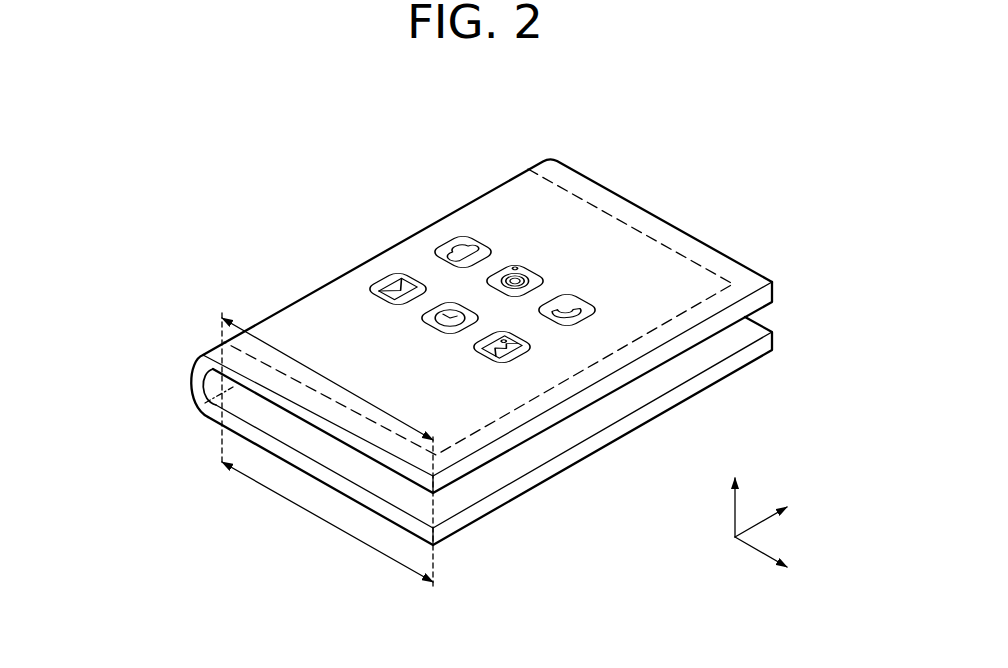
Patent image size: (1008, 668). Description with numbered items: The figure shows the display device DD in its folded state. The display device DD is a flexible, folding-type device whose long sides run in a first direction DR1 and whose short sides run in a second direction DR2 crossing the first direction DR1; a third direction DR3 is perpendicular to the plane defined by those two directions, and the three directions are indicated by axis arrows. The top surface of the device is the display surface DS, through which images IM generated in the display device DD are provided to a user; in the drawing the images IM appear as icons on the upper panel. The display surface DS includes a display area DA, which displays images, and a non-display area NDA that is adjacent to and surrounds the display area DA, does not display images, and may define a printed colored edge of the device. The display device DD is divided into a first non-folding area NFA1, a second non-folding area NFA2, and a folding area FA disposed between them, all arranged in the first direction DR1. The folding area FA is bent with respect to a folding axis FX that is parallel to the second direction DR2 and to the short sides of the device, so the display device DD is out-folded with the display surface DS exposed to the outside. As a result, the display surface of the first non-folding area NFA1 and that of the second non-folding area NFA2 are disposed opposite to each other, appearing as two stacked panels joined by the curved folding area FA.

The display device DD is at (447, 356).
The images IM is at (447, 236).
The display surface DS is at (487, 301).
The display area DA is at (663, 284).
The non-display area NDA is at (643, 222).
The folding area FA is at (222, 462).
The folding axis FX is at (205, 403).
The first non-folding area NFA1 is at (490, 449).
The second non-folding area NFA2 is at (492, 434).
The first direction DR1 is at (783, 562).
The second direction DR2 is at (783, 513).
The third direction DR3 is at (734, 496).